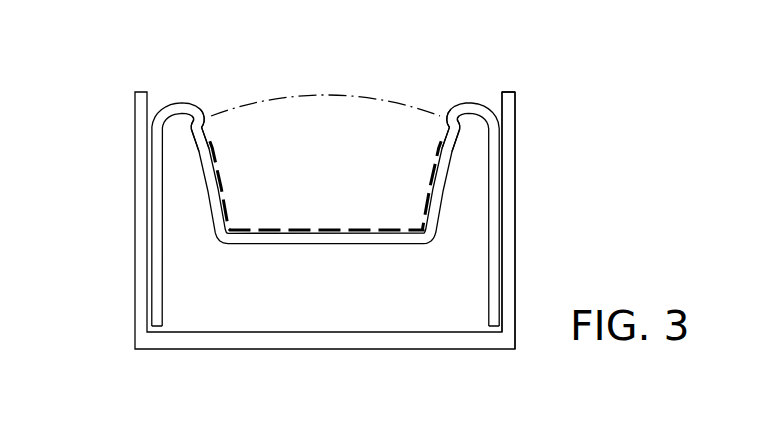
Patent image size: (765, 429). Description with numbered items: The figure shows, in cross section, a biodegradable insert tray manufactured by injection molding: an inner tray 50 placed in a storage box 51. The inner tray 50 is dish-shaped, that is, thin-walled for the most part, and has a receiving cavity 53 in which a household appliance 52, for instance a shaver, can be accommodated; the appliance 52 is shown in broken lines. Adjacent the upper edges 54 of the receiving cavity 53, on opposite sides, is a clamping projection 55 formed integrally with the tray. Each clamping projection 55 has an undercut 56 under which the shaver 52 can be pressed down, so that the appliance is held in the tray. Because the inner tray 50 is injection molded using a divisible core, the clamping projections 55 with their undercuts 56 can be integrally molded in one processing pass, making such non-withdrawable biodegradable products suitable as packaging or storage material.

The inner tray 50 is at (491, 228).
The storage box 51 is at (507, 152).
The household appliance 52 is at (320, 95).
The receiving cavity 53 is at (311, 191).
The upper edges 54 is at (186, 84).
The clamping projection 55 is at (205, 109).
The undercut 56 is at (435, 100).